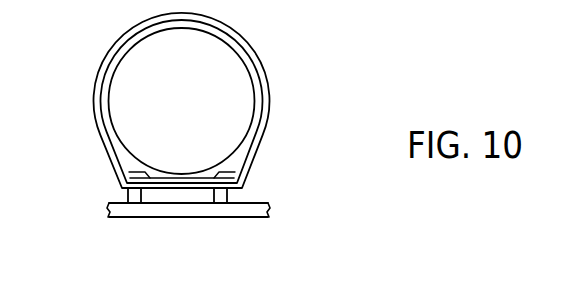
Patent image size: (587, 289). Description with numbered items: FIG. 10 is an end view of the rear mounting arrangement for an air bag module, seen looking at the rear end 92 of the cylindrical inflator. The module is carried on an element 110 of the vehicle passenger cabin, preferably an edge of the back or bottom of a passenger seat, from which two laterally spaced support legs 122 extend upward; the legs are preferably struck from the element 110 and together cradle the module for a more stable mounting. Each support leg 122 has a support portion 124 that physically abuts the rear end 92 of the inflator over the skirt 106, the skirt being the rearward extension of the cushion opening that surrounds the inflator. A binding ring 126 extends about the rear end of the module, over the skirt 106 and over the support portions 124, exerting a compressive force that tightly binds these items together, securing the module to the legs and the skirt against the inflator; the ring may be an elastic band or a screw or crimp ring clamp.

The rear end 92 is at (195, 113).
The skirt 106 is at (244, 39).
The binding ring 126 is at (272, 86).
The support portion 124 is at (129, 173).
The support leg 122 is at (145, 193).
The element of the vehicle passenger cabin 110 is at (122, 219).